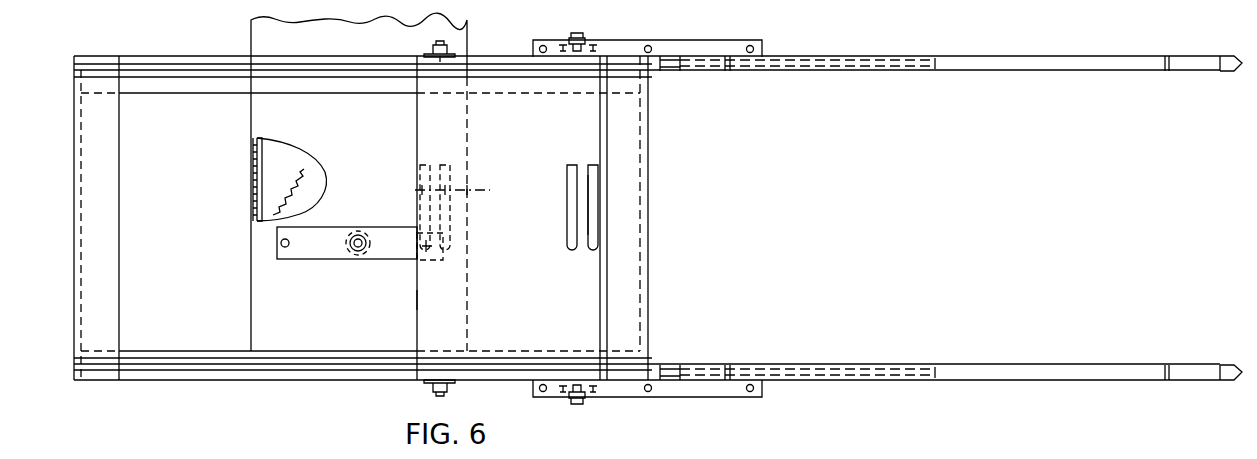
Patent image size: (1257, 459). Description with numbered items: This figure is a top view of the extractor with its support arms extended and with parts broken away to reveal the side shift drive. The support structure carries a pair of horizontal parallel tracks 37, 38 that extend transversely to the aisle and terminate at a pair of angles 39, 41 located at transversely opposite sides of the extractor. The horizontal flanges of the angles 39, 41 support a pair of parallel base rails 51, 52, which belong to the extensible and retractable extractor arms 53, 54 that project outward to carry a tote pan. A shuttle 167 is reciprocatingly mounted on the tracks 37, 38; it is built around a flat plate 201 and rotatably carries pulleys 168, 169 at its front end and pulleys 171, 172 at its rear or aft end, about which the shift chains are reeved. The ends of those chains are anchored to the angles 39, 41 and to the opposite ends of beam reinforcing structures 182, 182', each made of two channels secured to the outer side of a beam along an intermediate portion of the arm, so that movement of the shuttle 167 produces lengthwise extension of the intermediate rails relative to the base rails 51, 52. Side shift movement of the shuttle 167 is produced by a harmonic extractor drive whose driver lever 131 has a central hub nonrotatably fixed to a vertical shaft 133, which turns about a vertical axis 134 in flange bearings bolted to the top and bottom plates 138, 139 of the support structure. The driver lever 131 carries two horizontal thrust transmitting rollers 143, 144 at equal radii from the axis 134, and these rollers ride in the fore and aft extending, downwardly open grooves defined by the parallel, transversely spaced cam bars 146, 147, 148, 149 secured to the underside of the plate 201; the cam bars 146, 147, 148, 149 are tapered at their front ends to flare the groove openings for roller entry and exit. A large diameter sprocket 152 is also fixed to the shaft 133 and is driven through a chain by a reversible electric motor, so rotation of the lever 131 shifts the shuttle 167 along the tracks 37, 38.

The track 37 is at (378, 110).
The track 38 is at (405, 356).
The angle 39 is at (72, 258).
The angle 41 is at (650, 282).
The base rail 51 is at (162, 56).
The base rail 52 is at (160, 382).
The extractor arm 53 is at (1048, 72).
The extractor arm 54 is at (1096, 364).
The driver lever 131 is at (328, 232).
The vertical shaft 133 is at (364, 252).
The vertical axis 134 is at (354, 250).
The top plate 138 is at (258, 126).
The bottom plate 139 is at (262, 182).
The roller 143 is at (447, 241).
The roller 144 is at (286, 248).
The cam bar 146 is at (421, 199).
The cam bar 147 is at (472, 194).
The cam bar 148 is at (567, 180).
The cam bar 149 is at (595, 198).
The large diameter sprocket 152 is at (316, 184).
The shuttle 167 is at (423, 151).
The pulley 168 is at (428, 388).
The pulley 169 is at (579, 405).
The pulley 171 is at (452, 52).
The pulley 172 is at (592, 41).
The beam reinforcing structure 182 is at (647, 407).
The reinforcing structure 182' is at (647, 33).
The flat plate 201 is at (418, 302).